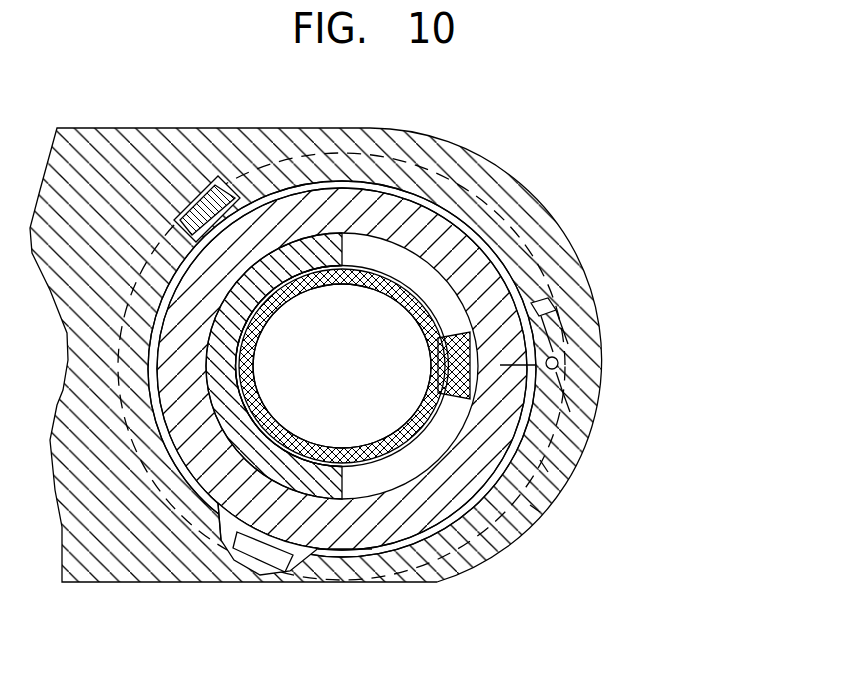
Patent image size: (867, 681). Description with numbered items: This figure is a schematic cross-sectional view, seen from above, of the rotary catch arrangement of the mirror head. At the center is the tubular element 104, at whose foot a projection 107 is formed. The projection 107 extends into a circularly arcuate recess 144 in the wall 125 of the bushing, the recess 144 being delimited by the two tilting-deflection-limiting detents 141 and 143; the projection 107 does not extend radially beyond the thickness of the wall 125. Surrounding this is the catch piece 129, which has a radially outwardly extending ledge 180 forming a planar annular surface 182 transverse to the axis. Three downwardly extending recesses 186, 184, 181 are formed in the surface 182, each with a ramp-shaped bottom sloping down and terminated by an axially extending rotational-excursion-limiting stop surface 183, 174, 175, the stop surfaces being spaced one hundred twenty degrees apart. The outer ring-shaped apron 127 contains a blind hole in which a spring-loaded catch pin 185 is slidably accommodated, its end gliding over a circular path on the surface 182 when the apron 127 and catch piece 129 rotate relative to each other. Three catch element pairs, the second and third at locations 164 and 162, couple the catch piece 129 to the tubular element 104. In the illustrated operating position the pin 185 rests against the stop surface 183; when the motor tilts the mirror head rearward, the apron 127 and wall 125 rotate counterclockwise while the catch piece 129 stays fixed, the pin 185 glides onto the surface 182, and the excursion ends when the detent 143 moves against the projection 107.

The tubular element 104 is at (280, 438).
The projection 107 is at (545, 468).
The wall 125 is at (328, 490).
The ring-shaped apron 127 is at (548, 230).
The catch piece 129 is at (513, 280).
The tilting-deflection-limiting detent 141 is at (341, 233).
The tilting-deflection-limiting detent 143 is at (382, 440).
The recess 144 is at (400, 267).
The third catch element pair 162 is at (272, 250).
The second catch element pair 164 is at (257, 560).
The rotational-excursion-limiting stop surface 174 is at (228, 568).
The rotational-excursion-limiting stop surface 175 is at (218, 188).
The ledge 180 is at (537, 510).
The recess 181 is at (190, 215).
The annular surface 182 is at (471, 507).
The rotational-excursion-limiting stop surface 183 is at (570, 412).
The recess 184 is at (283, 568).
The catch pin 185 is at (565, 385).
The recess 186 is at (550, 313).